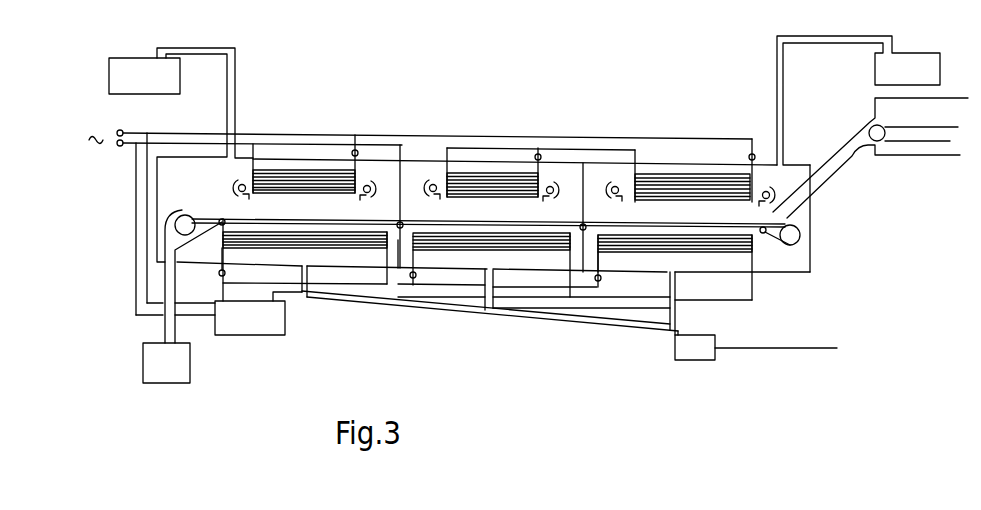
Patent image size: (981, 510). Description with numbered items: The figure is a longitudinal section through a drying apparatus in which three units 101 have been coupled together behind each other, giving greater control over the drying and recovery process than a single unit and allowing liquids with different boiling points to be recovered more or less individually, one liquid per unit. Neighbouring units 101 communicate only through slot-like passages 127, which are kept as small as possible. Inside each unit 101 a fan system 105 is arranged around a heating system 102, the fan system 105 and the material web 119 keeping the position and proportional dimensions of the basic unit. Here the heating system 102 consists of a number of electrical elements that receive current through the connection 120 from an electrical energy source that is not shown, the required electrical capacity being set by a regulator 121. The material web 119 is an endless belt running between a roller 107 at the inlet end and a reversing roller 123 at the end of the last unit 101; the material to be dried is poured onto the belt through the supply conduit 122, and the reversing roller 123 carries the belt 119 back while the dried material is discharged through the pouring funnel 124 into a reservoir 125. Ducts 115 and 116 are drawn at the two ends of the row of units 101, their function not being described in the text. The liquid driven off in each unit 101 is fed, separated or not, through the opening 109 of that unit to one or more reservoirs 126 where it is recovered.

The unit 101 is at (162, 192).
The heating system 102 is at (299, 190).
The fan system 105 is at (227, 191).
The roller 107 is at (763, 237).
The opening 109 is at (321, 278).
The air supply duct 115 is at (785, 108).
The air supply duct 116 is at (237, 108).
The material web 119 is at (656, 221).
The connection 120 is at (106, 151).
The regulator 121 is at (358, 152).
The supply conduit 122 is at (835, 176).
The reversing roller 123 is at (177, 231).
The pouring funnel 124 is at (163, 327).
The reservoir 125 is at (152, 380).
The reservoir 126 is at (686, 354).
The slot-like passage 127 is at (405, 222).